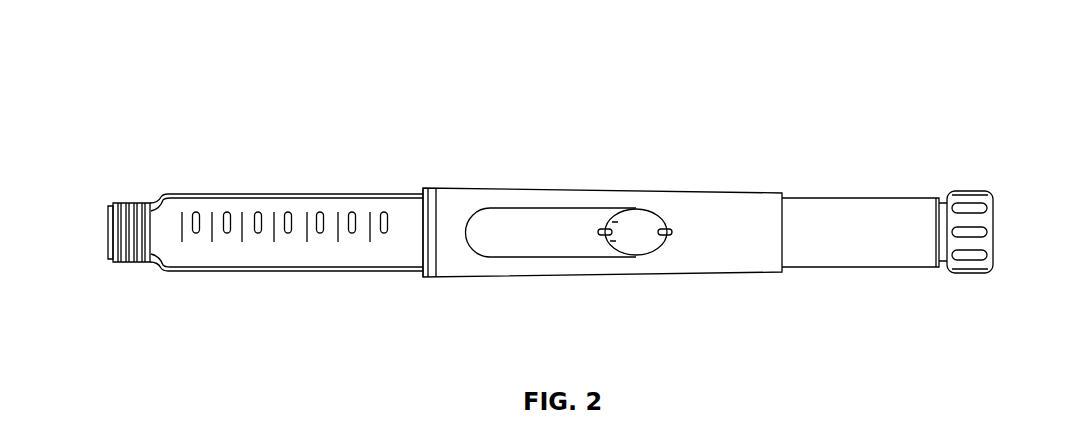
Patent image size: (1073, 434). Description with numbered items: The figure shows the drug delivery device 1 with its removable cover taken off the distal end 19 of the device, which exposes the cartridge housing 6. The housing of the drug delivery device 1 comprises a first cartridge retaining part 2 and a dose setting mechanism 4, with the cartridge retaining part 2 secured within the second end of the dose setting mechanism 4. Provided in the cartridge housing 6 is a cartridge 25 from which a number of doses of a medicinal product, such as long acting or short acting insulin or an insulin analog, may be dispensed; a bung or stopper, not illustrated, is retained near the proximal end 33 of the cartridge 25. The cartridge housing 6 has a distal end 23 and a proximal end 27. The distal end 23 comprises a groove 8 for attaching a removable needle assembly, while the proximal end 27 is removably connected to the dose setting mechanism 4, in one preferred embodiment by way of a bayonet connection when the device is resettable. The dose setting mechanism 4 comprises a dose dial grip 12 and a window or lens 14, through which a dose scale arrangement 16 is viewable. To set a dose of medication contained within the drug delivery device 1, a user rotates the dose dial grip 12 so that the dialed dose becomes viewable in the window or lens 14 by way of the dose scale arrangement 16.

The drug delivery device 1 is at (522, 82).
The cartridge retaining part 2 is at (302, 152).
The dose setting mechanism 4 is at (758, 137).
The cartridge housing 6 is at (338, 272).
The groove 8 is at (130, 205).
The dose dial grip 12 is at (990, 192).
The window or lens 14 is at (641, 250).
The dose scale arrangement 16 is at (645, 210).
The distal end 19 is at (157, 168).
The distal end 23 is at (167, 193).
The cartridge 25 is at (262, 272).
The proximal end 27 is at (403, 190).
The proximal end 33 is at (423, 277).